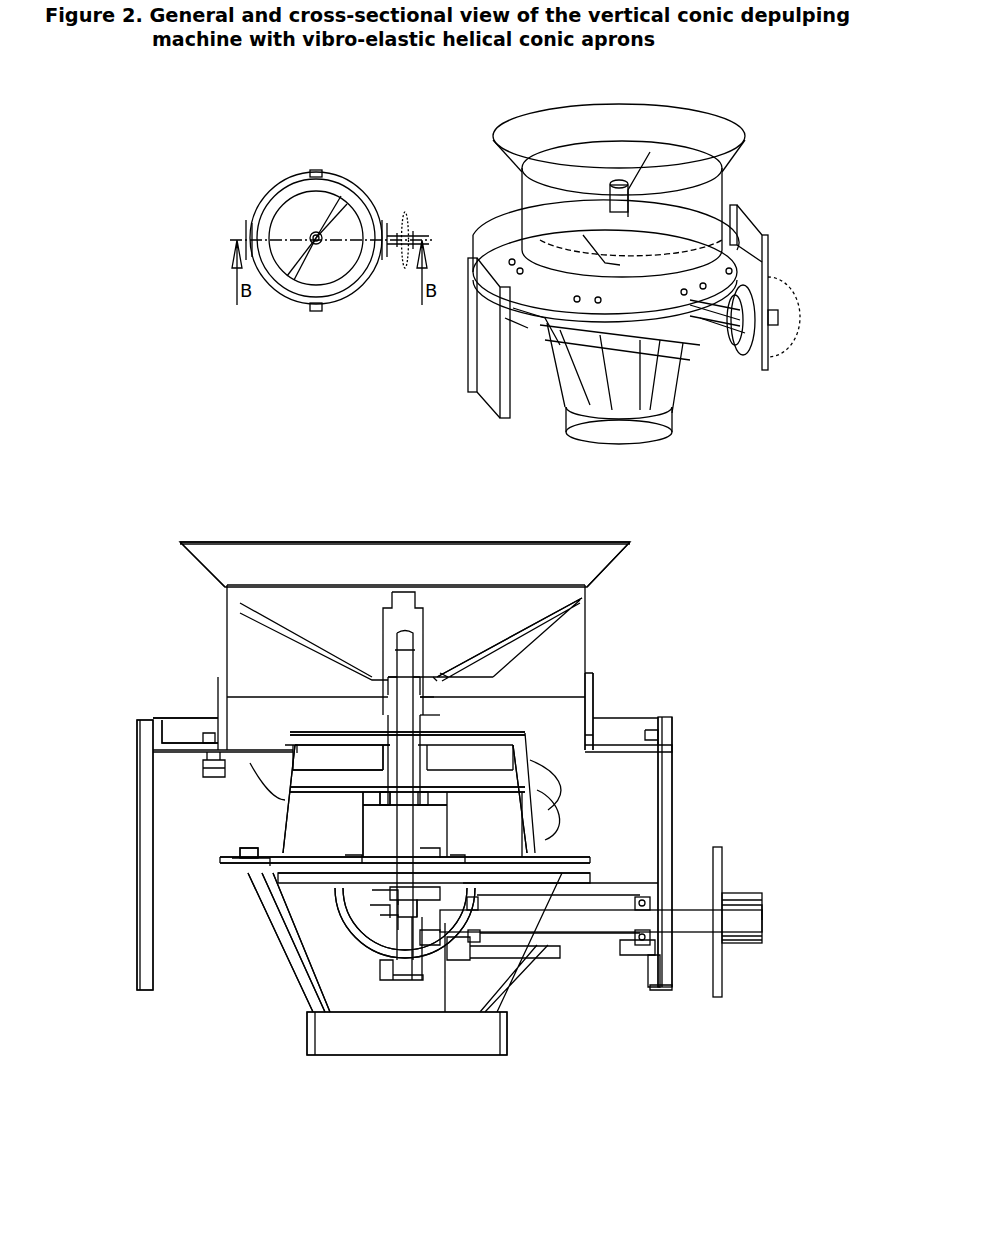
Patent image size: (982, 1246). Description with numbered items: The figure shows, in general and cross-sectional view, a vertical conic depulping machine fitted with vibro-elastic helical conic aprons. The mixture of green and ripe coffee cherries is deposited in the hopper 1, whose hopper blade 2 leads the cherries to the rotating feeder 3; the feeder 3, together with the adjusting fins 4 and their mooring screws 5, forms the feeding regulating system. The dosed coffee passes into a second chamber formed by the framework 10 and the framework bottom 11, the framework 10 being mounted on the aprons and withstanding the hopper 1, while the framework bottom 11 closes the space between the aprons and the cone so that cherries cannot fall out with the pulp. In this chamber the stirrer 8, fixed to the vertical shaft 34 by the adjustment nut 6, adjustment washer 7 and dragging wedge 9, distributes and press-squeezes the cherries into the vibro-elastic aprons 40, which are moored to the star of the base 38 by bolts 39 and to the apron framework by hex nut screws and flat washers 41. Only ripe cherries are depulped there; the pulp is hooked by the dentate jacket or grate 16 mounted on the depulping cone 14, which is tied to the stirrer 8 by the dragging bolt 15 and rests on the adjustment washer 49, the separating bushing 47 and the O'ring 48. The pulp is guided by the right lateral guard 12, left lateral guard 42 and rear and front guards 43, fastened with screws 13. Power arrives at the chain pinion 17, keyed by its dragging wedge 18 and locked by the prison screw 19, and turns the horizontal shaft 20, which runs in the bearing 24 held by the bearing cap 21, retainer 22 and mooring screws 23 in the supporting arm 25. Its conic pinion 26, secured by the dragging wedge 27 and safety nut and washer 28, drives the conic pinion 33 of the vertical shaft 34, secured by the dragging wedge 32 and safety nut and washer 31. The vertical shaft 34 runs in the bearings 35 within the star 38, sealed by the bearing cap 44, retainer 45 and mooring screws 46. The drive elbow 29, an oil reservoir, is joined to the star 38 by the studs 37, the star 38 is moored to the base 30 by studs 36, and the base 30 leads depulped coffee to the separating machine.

The hopper 1 is at (318, 572).
The hopper blade 2 is at (342, 647).
The feeder 3 is at (415, 627).
The adjusting fins 4 is at (467, 670).
The mooring screws 5 is at (430, 698).
The adjustment nut of stirrer 6 is at (433, 680).
The adjustment washer of stirrer 7 is at (445, 675).
The stirrer 8 is at (430, 694).
The dragging wedge of stirrer 9 is at (427, 711).
The framework 10 is at (593, 708).
The framework bottom 11 is at (668, 740).
The right lateral guard 12 is at (664, 778).
The screws with washer and nut 13 is at (666, 744).
The depulping cone 14 is at (528, 815).
The dragging bolt of depulping cone 15 is at (545, 833).
The dentate jacket or grate 16 is at (540, 842).
The chain pinion 17 is at (745, 905).
The dragging wedge of the chain pinion 18 is at (732, 912).
The prison screw of the chain pinion 19 is at (740, 942).
The horizontal shaft 20 is at (693, 920).
The horizontal shaft bearing cap 21 is at (655, 990).
The retainer 22 is at (648, 958).
The mooring screws of the bearing cap 23 is at (627, 947).
The bearing of horizontal shaft 24 is at (640, 908).
The supporting arm of horizontal shaft 25 is at (573, 942).
The conic pinion of horizontal shaft 26 is at (445, 1012).
The dragging wedge of conic pinion 27 is at (432, 942).
The mooring safety nut and washer 28 is at (425, 932).
The drive elbow 29 is at (393, 952).
The base 30 is at (312, 1020).
The mooring safety nut and washer 31 is at (405, 940).
The dragging wedge of vertical conic pinion 32 is at (398, 955).
The conic pinion of vertical shaft 33 is at (390, 920).
The vertical shaft 34 is at (388, 935).
The bearings of vertical shaft 35 is at (390, 957).
The mooring studs of the star and the base 36 is at (300, 893).
The studs joining the star of the base and the drive elbow 37 is at (303, 882).
The star of the base 38 is at (240, 866).
The mooring bolts of aprons 39 is at (242, 849).
The vibro-elastic aprons 40 is at (258, 787).
The hex nut screws and flat washer 41 is at (215, 743).
The left lateral guard 42 is at (150, 740).
The rear and front guards 43 is at (192, 727).
The bearing cap of vertical shaft 44 is at (228, 737).
The retainer 45 is at (378, 797).
The mooring screws of the bearing cap 46 is at (382, 784).
The separating bushing 47 is at (385, 770).
The O'ring 48 is at (388, 757).
The adjustment washer of depulping cone 49 is at (392, 745).